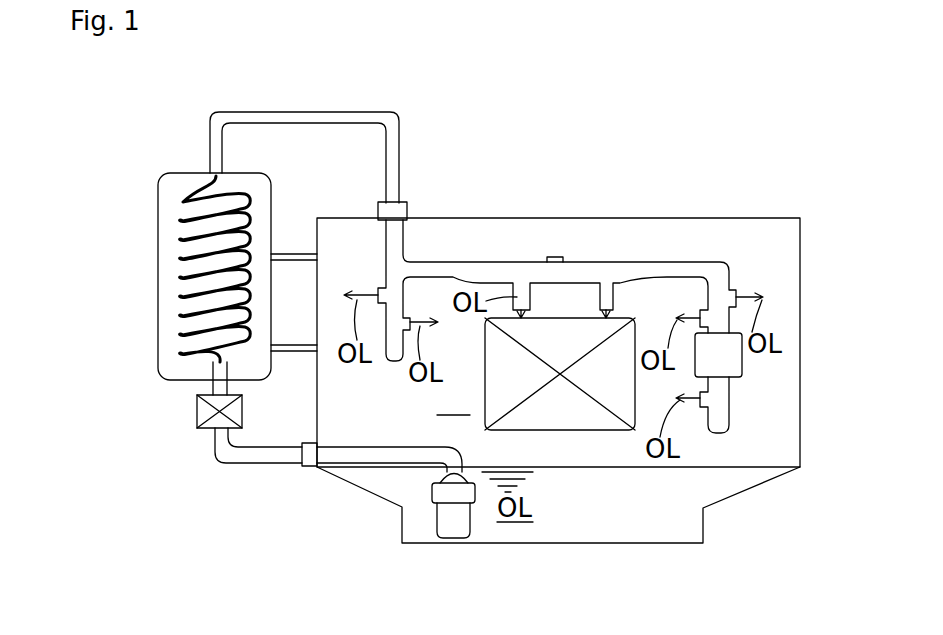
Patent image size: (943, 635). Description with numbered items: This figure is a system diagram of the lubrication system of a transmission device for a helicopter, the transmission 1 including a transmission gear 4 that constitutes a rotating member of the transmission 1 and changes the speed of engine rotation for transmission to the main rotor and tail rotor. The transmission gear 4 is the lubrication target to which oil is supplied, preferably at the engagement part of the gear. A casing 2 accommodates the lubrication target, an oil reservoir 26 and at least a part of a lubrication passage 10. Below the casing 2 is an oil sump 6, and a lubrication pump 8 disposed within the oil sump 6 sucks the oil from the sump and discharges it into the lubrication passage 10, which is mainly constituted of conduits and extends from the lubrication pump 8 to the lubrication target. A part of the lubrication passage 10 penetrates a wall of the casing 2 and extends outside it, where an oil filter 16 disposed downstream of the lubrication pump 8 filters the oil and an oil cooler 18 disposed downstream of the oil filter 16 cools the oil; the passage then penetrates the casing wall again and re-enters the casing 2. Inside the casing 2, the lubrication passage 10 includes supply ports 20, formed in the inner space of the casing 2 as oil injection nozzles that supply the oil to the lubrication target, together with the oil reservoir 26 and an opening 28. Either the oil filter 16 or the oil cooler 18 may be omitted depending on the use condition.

The transmission 1 is at (702, 124).
The casing 2 is at (482, 214).
The transmission gear 4 is at (598, 430).
The oil sump 6 is at (670, 530).
The lubrication pump 8 is at (450, 527).
The lubrication passage 10 is at (209, 110).
The oil filter 16 is at (200, 430).
The oil cooler 18 is at (172, 173).
The supply ports 20 is at (378, 290).
The oil reservoir 26 is at (743, 378).
The opening 28 is at (557, 257).